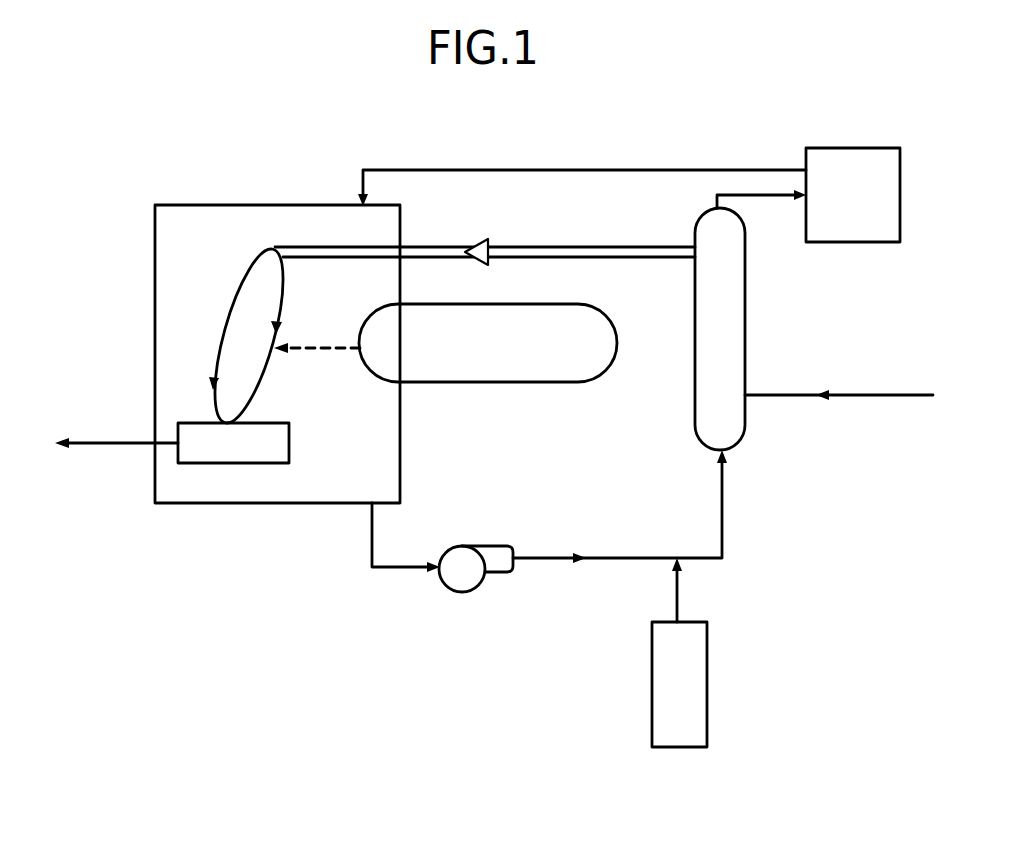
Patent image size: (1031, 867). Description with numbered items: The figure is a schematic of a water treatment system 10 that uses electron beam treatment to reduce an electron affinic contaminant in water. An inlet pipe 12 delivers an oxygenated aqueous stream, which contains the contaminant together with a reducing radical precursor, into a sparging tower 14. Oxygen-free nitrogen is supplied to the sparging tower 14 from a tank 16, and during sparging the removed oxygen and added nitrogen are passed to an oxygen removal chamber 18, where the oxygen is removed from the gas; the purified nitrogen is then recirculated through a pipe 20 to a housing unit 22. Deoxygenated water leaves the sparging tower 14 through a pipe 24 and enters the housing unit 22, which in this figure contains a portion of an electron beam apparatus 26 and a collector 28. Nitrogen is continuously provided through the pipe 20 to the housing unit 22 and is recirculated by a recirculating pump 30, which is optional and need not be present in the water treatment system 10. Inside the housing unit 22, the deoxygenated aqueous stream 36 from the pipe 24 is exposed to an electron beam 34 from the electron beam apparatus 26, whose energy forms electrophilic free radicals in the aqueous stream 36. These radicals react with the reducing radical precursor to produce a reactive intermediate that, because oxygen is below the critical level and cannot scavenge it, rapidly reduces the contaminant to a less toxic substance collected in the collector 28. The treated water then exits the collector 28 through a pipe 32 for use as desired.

The water treatment system 10 is at (938, 114).
The inlet pipe 12 is at (872, 393).
The sparging tower 14 is at (730, 333).
The tank 16 is at (693, 683).
The oxygen removal chamber 18 is at (890, 208).
The pipe 20 is at (685, 160).
The housing unit 22 is at (168, 330).
The pipe 24 is at (598, 258).
The electron beam apparatus 26 is at (577, 363).
The collector 28 is at (263, 453).
The recirculating pump 30 is at (467, 573).
The pipe 32 is at (140, 443).
The electron beam 34 is at (337, 352).
The deoxygenated aqueous stream 36 is at (237, 295).